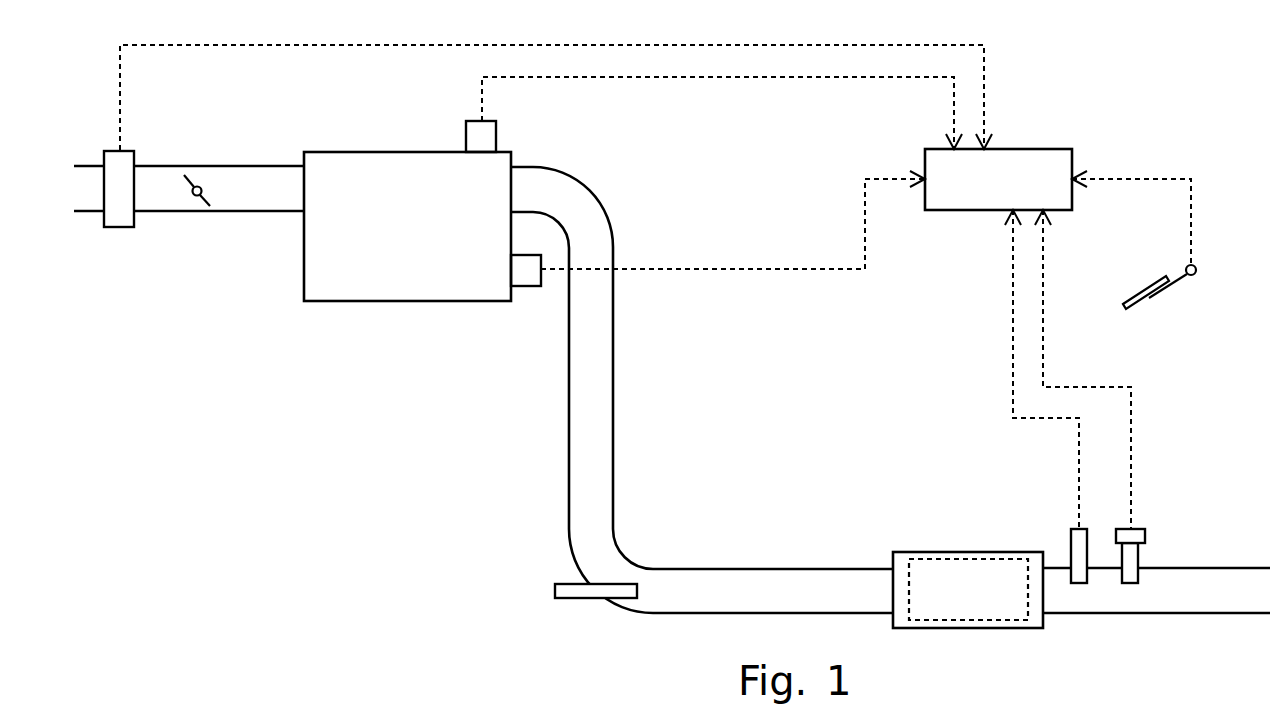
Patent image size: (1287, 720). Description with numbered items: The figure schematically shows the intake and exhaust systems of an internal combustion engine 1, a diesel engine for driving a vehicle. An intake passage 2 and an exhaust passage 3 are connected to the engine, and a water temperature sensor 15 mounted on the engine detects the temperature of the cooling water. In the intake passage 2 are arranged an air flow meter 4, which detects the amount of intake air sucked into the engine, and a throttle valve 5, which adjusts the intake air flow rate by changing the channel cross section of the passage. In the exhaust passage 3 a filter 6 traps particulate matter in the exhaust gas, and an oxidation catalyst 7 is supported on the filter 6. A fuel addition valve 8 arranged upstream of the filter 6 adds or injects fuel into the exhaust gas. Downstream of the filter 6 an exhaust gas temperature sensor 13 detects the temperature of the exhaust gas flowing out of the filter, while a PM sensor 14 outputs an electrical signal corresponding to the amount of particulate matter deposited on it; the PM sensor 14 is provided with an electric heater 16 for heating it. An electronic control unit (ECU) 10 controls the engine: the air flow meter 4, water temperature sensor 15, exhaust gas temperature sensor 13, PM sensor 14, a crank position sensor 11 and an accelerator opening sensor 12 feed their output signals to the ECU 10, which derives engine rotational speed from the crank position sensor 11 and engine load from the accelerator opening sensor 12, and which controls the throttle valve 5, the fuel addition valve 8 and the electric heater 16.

The internal combustion engine 1 is at (398, 301).
The intake passage 2 is at (260, 213).
The exhaust passage 3 is at (614, 449).
The air flow meter 4 is at (117, 228).
The throttle valve 5 is at (193, 194).
The filter 6 is at (936, 552).
The oxidation catalyst 7 is at (965, 559).
The fuel addition valve 8 is at (590, 598).
The electronic control unit (ECU) 10 is at (1042, 149).
The crank position sensor 11 is at (527, 287).
The accelerator opening sensor 12 is at (1191, 276).
The exhaust gas temperature sensor 13 is at (1071, 547).
The PM sensor 14 is at (1138, 555).
The water temperature sensor 15 is at (466, 137).
The electric heater 16 is at (1116, 535).